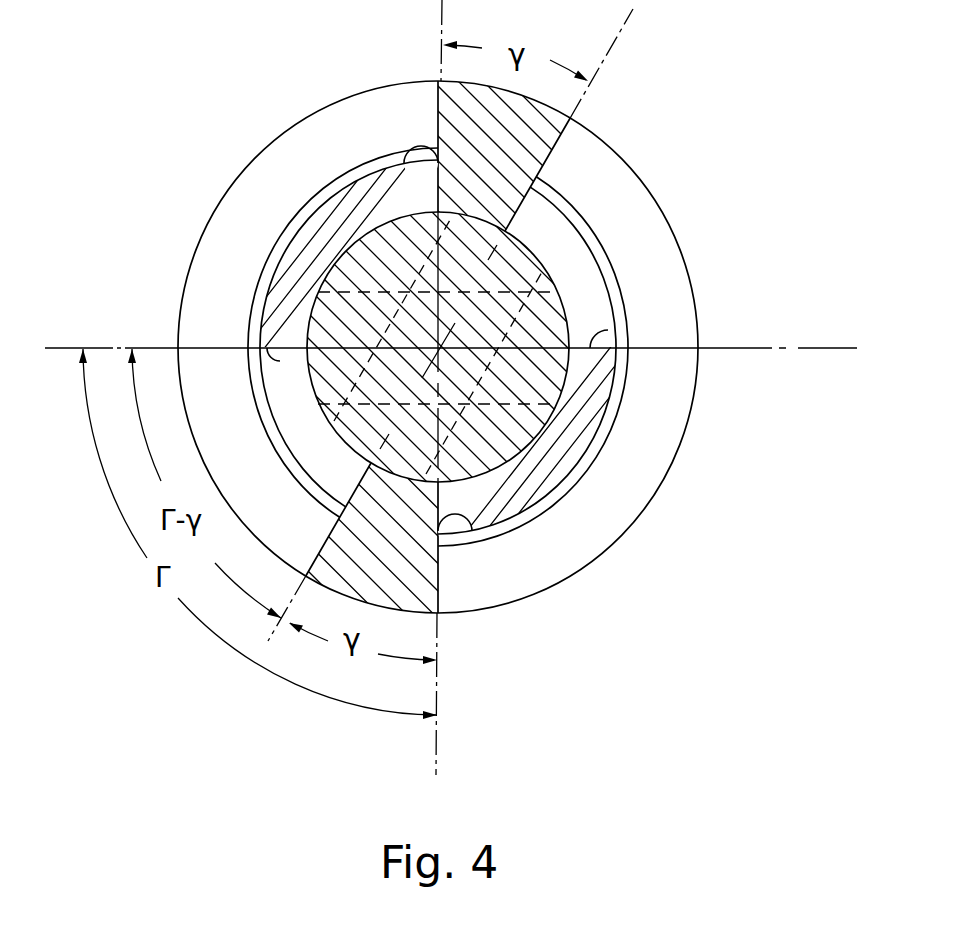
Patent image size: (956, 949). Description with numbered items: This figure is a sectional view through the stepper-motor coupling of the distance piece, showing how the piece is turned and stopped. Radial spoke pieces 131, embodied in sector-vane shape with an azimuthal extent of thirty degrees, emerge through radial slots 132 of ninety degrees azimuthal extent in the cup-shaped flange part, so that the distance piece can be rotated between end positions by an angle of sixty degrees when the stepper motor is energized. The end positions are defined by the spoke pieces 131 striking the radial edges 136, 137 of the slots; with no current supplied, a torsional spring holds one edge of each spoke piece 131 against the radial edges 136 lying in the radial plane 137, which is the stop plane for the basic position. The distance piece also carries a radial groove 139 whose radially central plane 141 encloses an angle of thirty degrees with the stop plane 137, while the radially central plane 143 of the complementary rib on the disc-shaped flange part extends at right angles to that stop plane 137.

The radial spoke pieces 131 is at (551, 127).
The radial slots 132 is at (578, 268).
The radial edges of the radial slots 136 is at (419, 166).
The radial plane (stop plane) 137 is at (608, 330).
The radial groove 139 is at (528, 236).
The radially central plane of the groove 141 is at (592, 82).
The radially central plane of the rib 143 is at (738, 347).